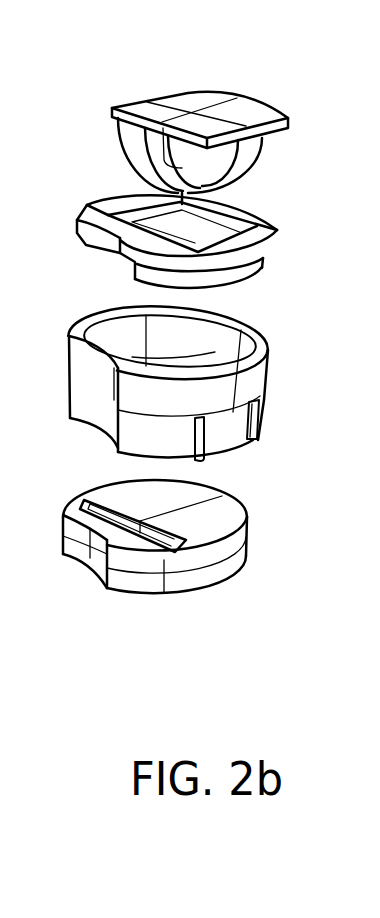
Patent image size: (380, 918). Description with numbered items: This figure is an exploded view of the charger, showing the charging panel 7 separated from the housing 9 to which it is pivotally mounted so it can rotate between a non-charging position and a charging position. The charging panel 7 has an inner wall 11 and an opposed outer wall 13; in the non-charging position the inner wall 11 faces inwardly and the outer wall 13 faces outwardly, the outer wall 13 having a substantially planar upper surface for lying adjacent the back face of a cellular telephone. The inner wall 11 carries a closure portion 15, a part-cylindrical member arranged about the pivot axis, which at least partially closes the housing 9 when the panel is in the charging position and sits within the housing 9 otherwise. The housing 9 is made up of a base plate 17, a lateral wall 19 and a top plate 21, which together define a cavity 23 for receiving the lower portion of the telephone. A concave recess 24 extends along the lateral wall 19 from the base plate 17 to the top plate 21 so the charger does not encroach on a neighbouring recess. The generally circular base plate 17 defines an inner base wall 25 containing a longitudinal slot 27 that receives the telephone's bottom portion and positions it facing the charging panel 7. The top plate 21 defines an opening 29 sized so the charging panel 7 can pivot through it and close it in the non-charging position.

The charging panel 7 is at (140, 85).
The outer wall 13 is at (241, 110).
The closure portion 15 is at (180, 158).
The inner wall 11 is at (183, 168).
The concave recess 24 is at (102, 240).
The opening 29 is at (200, 227).
The top plate 21 is at (263, 258).
The cavity 23 is at (154, 337).
The lateral wall 19 is at (233, 412).
The housing 9 is at (294, 430).
The base plate 17 is at (215, 531).
The longitudinal slot 27 is at (121, 522).
The inner base wall 25 is at (192, 522).